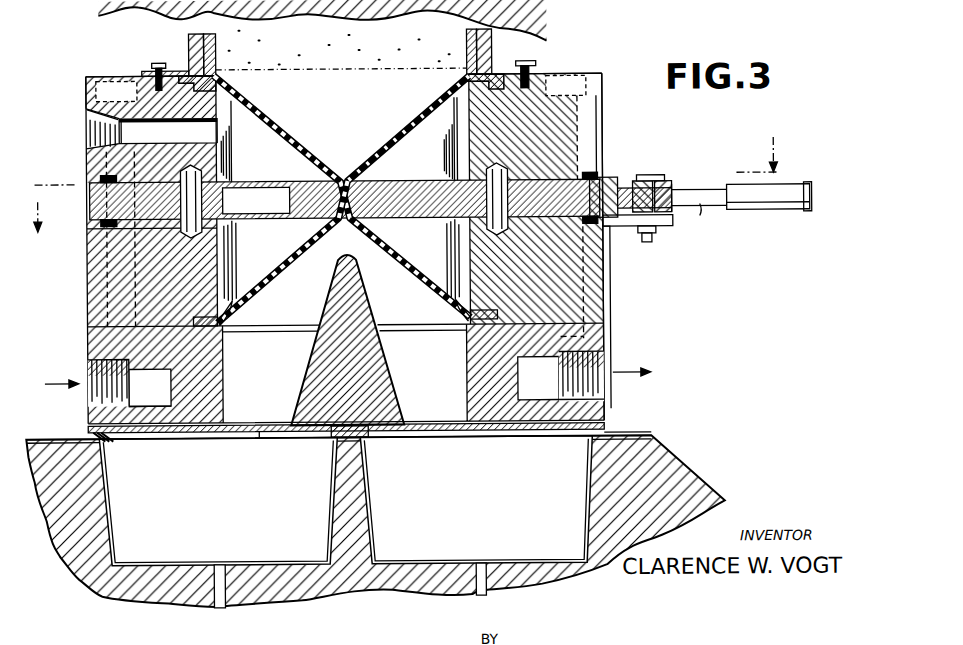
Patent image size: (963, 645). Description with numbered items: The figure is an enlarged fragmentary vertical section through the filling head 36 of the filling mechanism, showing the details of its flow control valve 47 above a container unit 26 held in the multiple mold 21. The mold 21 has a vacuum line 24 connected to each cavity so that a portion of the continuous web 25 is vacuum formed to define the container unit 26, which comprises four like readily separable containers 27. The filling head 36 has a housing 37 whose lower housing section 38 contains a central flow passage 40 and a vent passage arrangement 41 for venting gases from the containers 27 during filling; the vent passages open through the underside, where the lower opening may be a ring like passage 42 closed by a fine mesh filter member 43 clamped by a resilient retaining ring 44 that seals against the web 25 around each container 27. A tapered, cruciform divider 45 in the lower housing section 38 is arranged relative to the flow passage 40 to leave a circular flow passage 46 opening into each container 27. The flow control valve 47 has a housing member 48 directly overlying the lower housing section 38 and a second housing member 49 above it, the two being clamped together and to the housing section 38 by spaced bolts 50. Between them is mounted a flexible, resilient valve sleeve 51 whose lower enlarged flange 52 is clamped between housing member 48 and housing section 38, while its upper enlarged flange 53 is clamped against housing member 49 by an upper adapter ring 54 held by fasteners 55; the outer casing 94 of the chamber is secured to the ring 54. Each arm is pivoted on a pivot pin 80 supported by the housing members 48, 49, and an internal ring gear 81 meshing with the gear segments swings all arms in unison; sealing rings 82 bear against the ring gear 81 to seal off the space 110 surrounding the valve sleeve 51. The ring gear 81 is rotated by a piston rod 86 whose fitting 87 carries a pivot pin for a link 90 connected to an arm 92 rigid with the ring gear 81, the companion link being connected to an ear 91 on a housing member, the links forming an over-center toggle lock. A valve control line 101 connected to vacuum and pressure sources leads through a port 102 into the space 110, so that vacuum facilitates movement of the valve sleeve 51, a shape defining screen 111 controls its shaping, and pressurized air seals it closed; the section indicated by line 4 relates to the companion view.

The section line 4- 4 is at (413, 195).
The multiple mold 21 is at (300, 625).
The vacuum line 24 is at (212, 590).
The continuous web 25 is at (660, 434).
The container unit 26 is at (372, 462).
The containers 27 is at (112, 516).
The filling head 36 is at (612, 306).
The housing 37 is at (78, 272).
The lower housing section 38 is at (608, 410).
The central flow passage 40 is at (466, 334).
The vent passage arrangement 41 is at (172, 366).
The ring like passage 42 is at (170, 410).
The filter member 43 is at (186, 432).
The retaining ring 44 is at (105, 446).
The divider 45 is at (369, 322).
The circular flow passage 46 is at (258, 434).
The flow control valve 47 is at (606, 93).
The housing member 48 is at (600, 312).
The second housing member 49 is at (88, 78).
The bolts 50 is at (112, 78).
The valve sleeve 51 is at (388, 152).
The enlarged flange 52 is at (196, 325).
The enlarged flange 53 is at (226, 82).
The upper adapter ring 54 is at (170, 62).
The fasteners 55 is at (528, 62).
The pivot pin 80 is at (205, 184).
The internal ring gear 81 is at (612, 232).
The sealing rings 82 is at (100, 176).
The piston rod 86 is at (752, 212).
The fitting 87 is at (700, 216).
The link 90 is at (660, 182).
The ear 91 is at (668, 240).
The arm 92 is at (606, 196).
The outer casing 94 is at (482, 16).
The valve control line 101 is at (88, 150).
The port 102 is at (216, 128).
The space 110 is at (236, 252).
The shape defining screen 111 is at (245, 276).